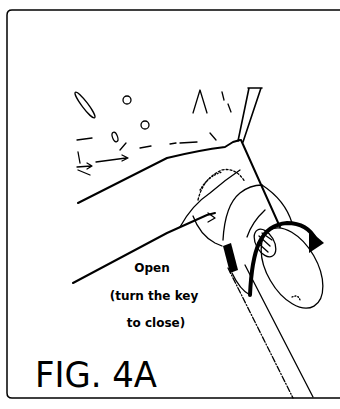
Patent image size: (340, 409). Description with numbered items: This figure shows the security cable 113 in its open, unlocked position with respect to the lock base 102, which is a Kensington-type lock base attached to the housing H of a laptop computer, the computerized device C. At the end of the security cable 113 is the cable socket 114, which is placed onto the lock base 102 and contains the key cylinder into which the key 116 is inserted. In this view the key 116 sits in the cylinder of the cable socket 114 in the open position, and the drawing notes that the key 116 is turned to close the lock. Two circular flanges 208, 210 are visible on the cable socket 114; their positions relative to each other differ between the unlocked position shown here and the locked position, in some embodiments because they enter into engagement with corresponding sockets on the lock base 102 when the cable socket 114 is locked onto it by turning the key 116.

The computerized device C is at (108, 86).
The housing H is at (241, 141).
The lock base 102 is at (242, 165).
The circular flange 208 is at (230, 180).
The cable socket 114 is at (247, 187).
The circular flange 210 is at (212, 217).
The security cable 113 is at (247, 300).
The key 116 is at (283, 298).